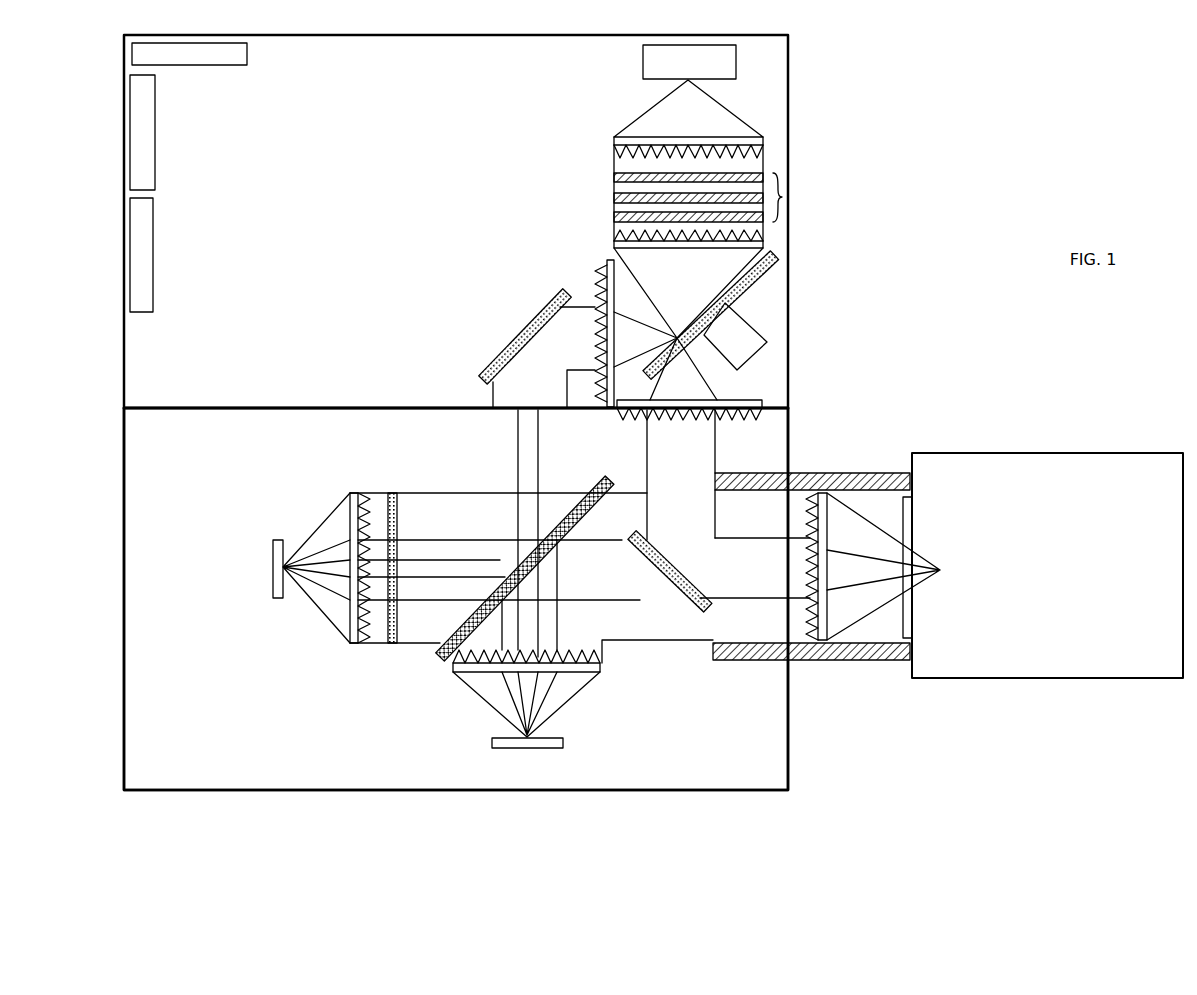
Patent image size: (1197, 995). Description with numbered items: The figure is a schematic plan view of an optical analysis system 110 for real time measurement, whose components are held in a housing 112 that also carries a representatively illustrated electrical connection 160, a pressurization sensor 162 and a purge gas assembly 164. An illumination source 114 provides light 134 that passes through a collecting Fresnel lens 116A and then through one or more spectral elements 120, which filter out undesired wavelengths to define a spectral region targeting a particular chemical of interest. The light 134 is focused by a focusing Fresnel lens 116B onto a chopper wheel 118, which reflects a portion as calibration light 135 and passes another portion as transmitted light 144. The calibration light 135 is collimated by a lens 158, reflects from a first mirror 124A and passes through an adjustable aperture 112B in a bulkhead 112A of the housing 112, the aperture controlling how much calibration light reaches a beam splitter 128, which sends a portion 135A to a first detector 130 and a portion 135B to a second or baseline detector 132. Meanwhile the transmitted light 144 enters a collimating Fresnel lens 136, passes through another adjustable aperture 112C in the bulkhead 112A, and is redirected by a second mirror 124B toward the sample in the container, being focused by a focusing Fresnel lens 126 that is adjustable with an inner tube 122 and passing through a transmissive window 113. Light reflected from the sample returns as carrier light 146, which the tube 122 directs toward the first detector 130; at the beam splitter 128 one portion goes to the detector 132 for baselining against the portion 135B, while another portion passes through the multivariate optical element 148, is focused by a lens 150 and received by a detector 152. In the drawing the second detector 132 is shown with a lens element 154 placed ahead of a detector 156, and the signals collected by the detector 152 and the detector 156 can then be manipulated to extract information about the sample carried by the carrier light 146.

The optical analysis system 110 is at (1020, 137).
The housing 112 is at (755, 790).
The bulkhead 112A is at (277, 408).
The adjustable aperture 112B is at (513, 410).
The adjustable aperture 112C is at (762, 420).
The transmissive window 113 is at (913, 610).
The illumination source 114 is at (736, 52).
The collecting Fresnel lens 116A is at (613, 140).
The focusing Fresnel lens 116B is at (613, 242).
The chopper wheel 118 is at (765, 268).
The spectral elements 120 is at (782, 197).
The inner tube 122 is at (895, 660).
The first mirror 124A is at (517, 333).
The second mirror 124B is at (663, 592).
The focusing Fresnel lens 126 is at (820, 660).
The beam splitter 128 is at (565, 510).
The first detector 130 is at (308, 497).
The second detector 132 is at (620, 740).
The light 134 is at (737, 115).
The calibration light 135 is at (518, 393).
The portion of calibration light 135A is at (483, 563).
The portion of calibration light 135B is at (533, 620).
The collimating Fresnel lens 136 is at (747, 397).
The transmitted light 144 is at (718, 571).
The carrier light 146 is at (873, 540).
The multivariate optical element 148 is at (392, 645).
The lens 150 is at (350, 645).
The detector 152 is at (275, 598).
The focusing lens 154 is at (607, 668).
The detector 156 is at (545, 750).
The lens 158 is at (595, 263).
The electrical connection 160 is at (155, 132).
The pressurization sensor 162 is at (192, 65).
The purge gas assembly 164 is at (153, 213).